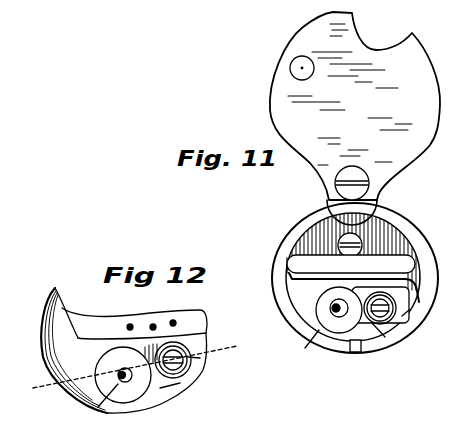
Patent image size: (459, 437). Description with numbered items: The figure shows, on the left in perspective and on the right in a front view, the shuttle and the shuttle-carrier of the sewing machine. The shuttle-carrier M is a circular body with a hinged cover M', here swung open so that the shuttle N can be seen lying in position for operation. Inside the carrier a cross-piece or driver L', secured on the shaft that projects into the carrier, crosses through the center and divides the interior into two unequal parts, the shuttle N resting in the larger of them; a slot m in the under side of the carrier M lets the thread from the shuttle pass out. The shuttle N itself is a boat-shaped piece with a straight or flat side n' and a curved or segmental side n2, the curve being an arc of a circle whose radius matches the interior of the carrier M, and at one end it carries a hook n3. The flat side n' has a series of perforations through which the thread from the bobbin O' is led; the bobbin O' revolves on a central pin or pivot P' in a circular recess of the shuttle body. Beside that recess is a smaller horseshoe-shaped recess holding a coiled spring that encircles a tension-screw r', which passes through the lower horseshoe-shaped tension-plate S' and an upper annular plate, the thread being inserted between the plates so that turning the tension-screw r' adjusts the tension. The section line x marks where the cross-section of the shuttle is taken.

In FIG. 11, the hinged cover M' is at (355, 106).
In FIG. 11, the shuttle-carrier M is at (339, 278).
In FIG. 11, the hook n3 is at (289, 271).
In FIG. 12, the hook n3 is at (134, 312).
In FIG. 11, the bar I' is at (351, 264).
In FIG. 11, the screw r is at (380, 305).
In FIG. 11, the bobbin O' is at (339, 310).
In FIG. 12, the bobbin O' is at (133, 382).
In FIG. 11, the pin or pivot P' is at (344, 315).
In FIG. 12, the pin or pivot P' is at (123, 375).
In FIG. 11, the cross-piece L' is at (407, 317).
In FIG. 12, the cross-piece L' is at (207, 362).
In FIG. 11, the tension-plate S' is at (384, 334).
In FIG. 12, the tension-plate S' is at (181, 390).
In FIG. 11, the slot m is at (359, 354).
In FIG. 11, the shuttle N is at (302, 349).
In FIG. 12, the shuttle N is at (112, 350).
In FIG. 12, the straight or flat side n' is at (138, 326).
In FIG. 12, the curved or segmental side n2 is at (124, 376).
In FIG. 12, the section line x is at (134, 368).
In FIG. 12, the tension-screw r' is at (186, 362).